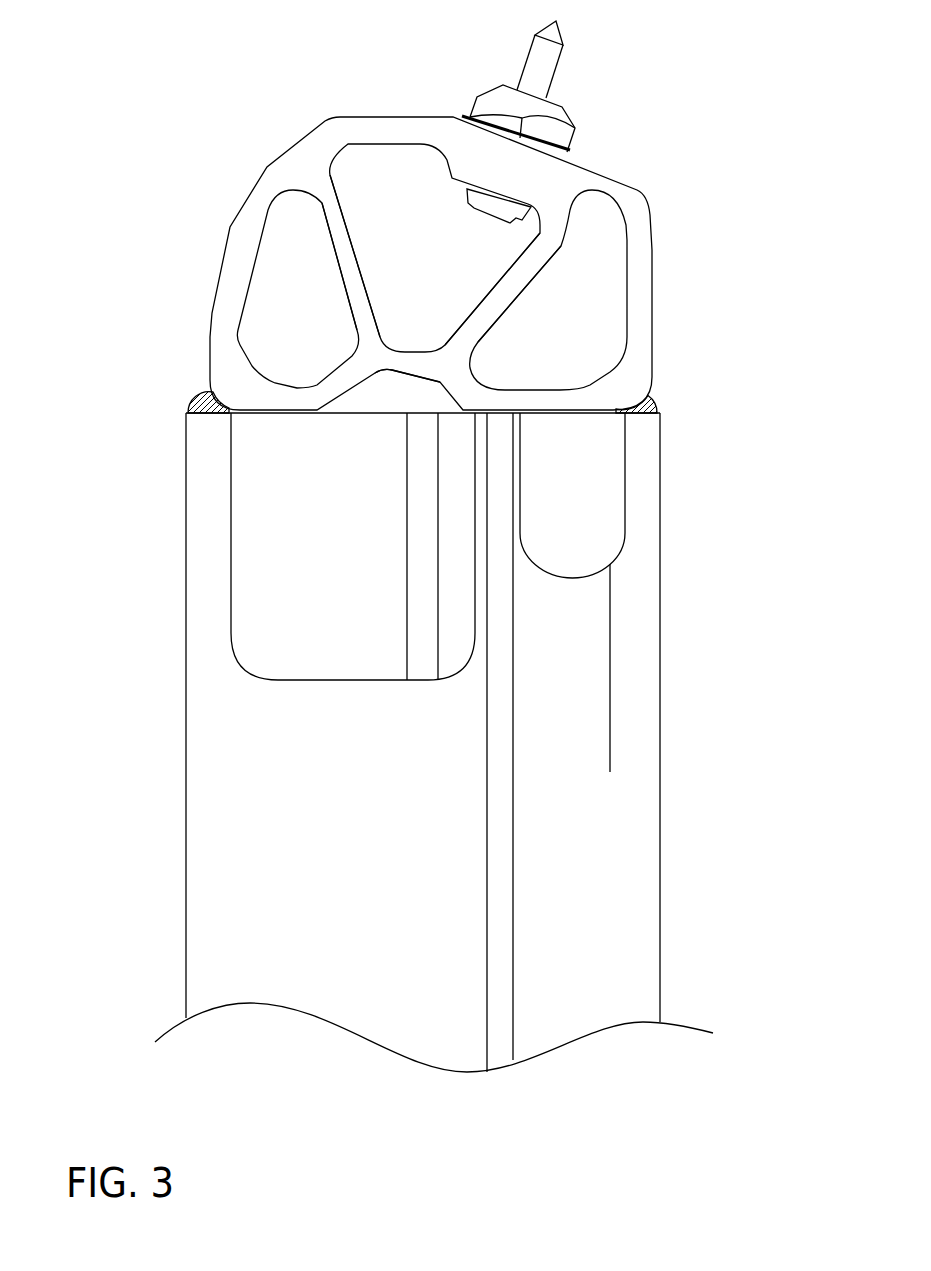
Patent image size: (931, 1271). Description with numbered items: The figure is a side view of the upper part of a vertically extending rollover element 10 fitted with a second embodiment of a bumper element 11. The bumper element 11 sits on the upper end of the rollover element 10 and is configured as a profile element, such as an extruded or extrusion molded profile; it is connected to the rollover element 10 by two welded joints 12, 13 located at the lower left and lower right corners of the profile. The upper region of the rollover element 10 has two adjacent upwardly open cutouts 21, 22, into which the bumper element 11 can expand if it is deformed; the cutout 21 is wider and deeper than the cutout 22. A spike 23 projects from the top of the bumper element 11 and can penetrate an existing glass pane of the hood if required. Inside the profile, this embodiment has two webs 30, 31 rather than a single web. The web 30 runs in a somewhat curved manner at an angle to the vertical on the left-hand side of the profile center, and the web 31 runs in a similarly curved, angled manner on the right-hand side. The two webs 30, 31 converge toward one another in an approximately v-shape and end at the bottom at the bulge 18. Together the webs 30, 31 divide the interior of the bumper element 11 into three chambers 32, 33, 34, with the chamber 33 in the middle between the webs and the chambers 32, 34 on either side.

The rollover element 10 is at (633, 787).
The bumper element 11 is at (643, 345).
The welded joint 12 is at (200, 403).
The welded joint 13 is at (650, 402).
The bulge 18 is at (400, 360).
The cutout 21 is at (287, 580).
The cutout 22 is at (570, 548).
The spike 23 is at (545, 62).
The web 30 is at (338, 255).
The web 31 is at (515, 282).
The chamber 32 is at (304, 322).
The chamber 33 is at (420, 224).
The chamber 34 is at (567, 347).